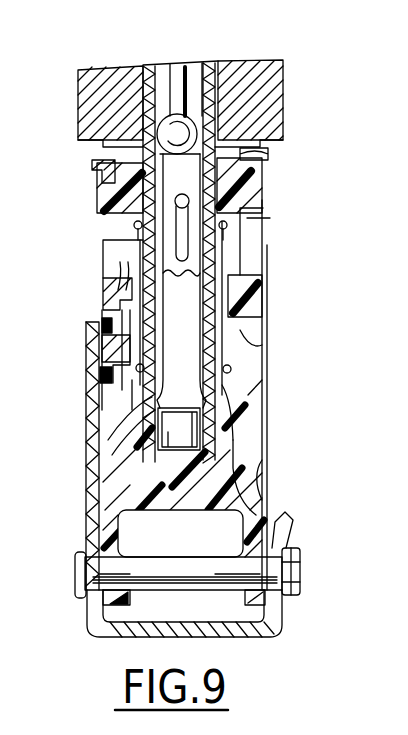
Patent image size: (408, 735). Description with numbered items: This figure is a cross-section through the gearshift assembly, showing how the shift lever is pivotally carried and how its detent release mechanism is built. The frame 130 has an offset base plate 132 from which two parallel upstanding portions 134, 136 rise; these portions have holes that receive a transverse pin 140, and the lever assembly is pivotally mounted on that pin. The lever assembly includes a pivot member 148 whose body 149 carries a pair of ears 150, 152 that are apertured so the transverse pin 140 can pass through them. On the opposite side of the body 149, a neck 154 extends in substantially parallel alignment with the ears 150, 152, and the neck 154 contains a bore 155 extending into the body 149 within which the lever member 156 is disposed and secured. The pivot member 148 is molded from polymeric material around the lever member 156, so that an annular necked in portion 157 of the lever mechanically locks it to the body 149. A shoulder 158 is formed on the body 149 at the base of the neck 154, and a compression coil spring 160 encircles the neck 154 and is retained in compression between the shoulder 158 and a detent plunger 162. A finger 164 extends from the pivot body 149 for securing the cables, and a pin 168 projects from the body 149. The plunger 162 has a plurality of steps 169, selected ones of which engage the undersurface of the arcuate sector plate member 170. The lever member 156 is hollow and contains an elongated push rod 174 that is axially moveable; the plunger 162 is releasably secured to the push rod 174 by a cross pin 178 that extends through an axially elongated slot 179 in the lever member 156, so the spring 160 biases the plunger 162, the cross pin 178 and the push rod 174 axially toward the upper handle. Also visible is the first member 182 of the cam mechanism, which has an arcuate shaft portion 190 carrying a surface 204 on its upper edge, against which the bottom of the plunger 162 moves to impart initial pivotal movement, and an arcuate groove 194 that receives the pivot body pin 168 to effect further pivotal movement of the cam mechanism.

The frame 130 is at (98, 646).
The offset base plate 132 is at (223, 637).
The upstanding portion 134 is at (266, 620).
The upstanding portion 136 is at (86, 452).
The transverse pin 140 is at (292, 575).
The pivot member 148 is at (259, 383).
The body 149 is at (150, 393).
The ear 150 is at (118, 531).
The ear 152 is at (258, 525).
The neck 154 is at (245, 299).
The bore 155 is at (248, 447).
The lever member 156 is at (151, 64).
The annular necked in portion 157 is at (230, 397).
The shoulder 158 is at (238, 367).
The compression coil spring 160 is at (227, 226).
The detent plunger 162 is at (91, 207).
The finger 164 is at (255, 273).
The pin 168 is at (103, 312).
The steps 169 is at (252, 153).
The arcuate sector plate member 170 is at (95, 166).
The push rod 174 is at (200, 66).
The cross pin 178 is at (192, 208).
The axially elongated slot 179 is at (190, 263).
The first member 182 is at (88, 369).
The arcuate shaft portion 190 is at (100, 385).
The arcuate groove 194 is at (116, 284).
The surface 204 is at (99, 281).